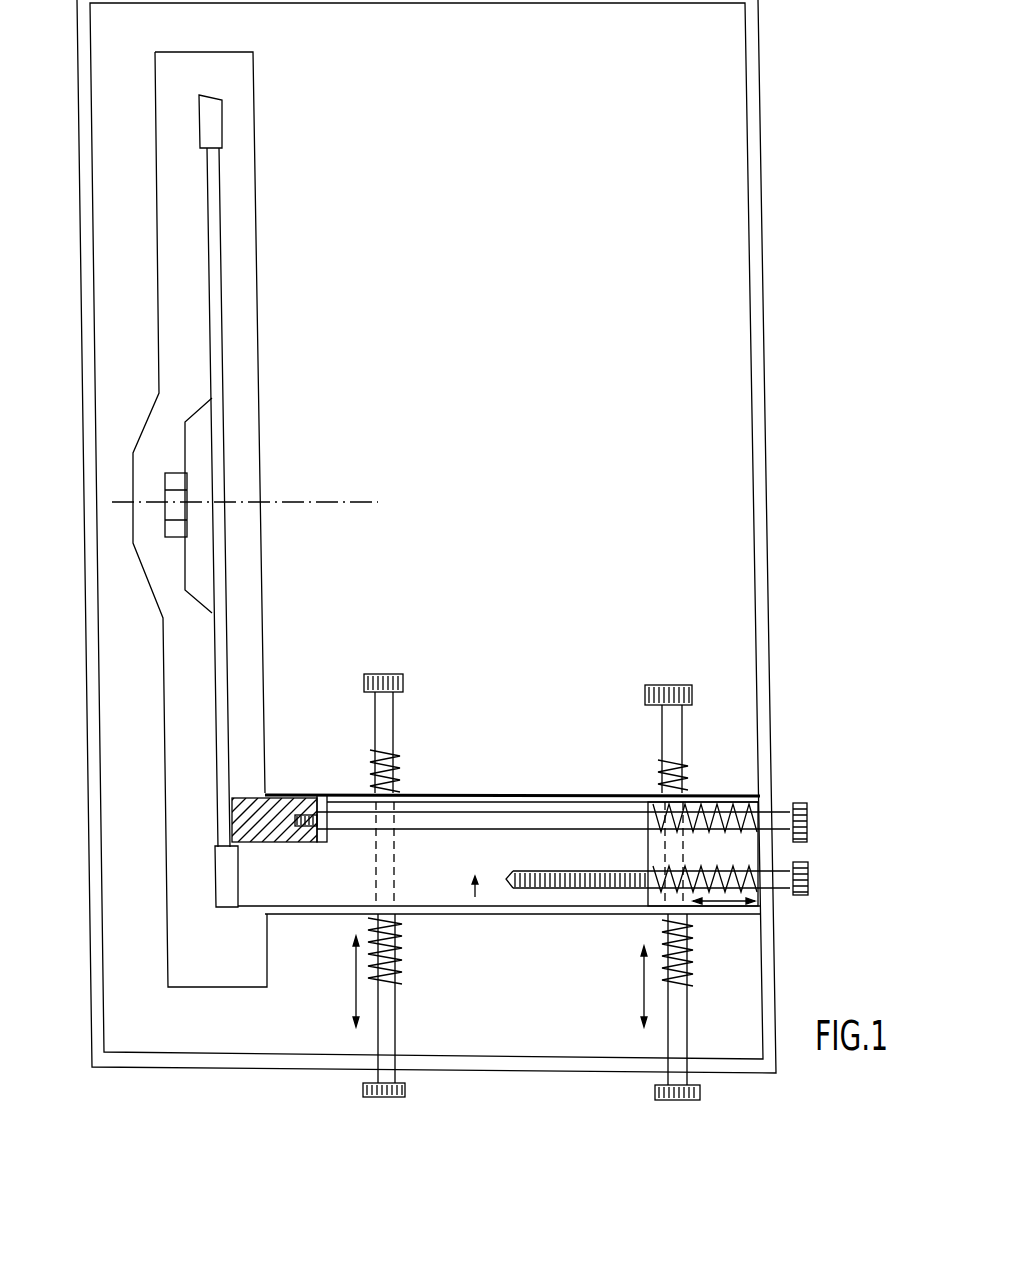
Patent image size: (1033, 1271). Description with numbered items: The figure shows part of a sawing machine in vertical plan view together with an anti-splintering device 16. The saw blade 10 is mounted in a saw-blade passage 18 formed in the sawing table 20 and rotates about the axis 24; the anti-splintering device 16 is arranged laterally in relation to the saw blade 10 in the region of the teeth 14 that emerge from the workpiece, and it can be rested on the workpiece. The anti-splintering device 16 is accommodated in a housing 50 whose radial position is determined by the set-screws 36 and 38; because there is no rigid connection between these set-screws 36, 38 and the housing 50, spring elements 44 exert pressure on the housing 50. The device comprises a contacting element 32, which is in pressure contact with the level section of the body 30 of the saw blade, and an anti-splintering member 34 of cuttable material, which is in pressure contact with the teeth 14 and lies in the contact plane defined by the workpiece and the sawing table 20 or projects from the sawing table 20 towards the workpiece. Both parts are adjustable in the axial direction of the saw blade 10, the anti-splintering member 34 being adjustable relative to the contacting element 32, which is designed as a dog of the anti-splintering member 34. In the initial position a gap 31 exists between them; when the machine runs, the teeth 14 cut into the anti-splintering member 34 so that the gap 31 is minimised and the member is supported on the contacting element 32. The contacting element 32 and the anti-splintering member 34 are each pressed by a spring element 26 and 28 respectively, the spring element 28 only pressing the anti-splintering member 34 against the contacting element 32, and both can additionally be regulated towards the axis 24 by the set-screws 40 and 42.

The saw blade 10 is at (236, 192).
The teeth of the saw blade 14 is at (215, 886).
The anti-splintering device 16 is at (553, 668).
The saw-blade passage 18 is at (255, 88).
The sawing table 20 is at (762, 107).
The axis 24 is at (321, 500).
The spring element 26 is at (718, 793).
The spring element 28 is at (693, 913).
The body of the saw blade 30 is at (222, 326).
The gap 31 is at (326, 793).
The contacting element 32 is at (283, 790).
The anti-splintering member 34 is at (483, 920).
The set-screw 36 is at (390, 673).
The set-screw 38 is at (672, 685).
The set-screw 40 is at (812, 805).
The set-screw 42 is at (808, 880).
The spring elements 44 is at (400, 765).
The housing 50 is at (512, 790).